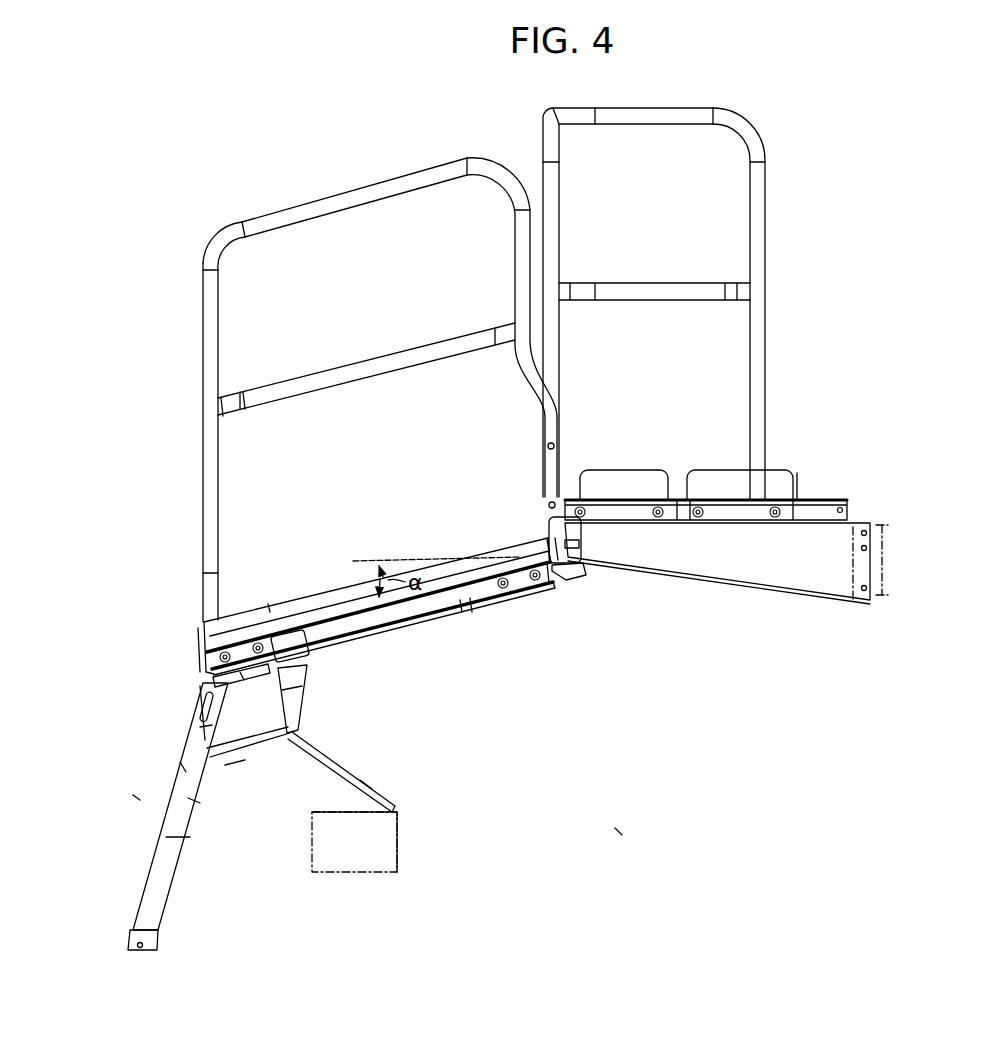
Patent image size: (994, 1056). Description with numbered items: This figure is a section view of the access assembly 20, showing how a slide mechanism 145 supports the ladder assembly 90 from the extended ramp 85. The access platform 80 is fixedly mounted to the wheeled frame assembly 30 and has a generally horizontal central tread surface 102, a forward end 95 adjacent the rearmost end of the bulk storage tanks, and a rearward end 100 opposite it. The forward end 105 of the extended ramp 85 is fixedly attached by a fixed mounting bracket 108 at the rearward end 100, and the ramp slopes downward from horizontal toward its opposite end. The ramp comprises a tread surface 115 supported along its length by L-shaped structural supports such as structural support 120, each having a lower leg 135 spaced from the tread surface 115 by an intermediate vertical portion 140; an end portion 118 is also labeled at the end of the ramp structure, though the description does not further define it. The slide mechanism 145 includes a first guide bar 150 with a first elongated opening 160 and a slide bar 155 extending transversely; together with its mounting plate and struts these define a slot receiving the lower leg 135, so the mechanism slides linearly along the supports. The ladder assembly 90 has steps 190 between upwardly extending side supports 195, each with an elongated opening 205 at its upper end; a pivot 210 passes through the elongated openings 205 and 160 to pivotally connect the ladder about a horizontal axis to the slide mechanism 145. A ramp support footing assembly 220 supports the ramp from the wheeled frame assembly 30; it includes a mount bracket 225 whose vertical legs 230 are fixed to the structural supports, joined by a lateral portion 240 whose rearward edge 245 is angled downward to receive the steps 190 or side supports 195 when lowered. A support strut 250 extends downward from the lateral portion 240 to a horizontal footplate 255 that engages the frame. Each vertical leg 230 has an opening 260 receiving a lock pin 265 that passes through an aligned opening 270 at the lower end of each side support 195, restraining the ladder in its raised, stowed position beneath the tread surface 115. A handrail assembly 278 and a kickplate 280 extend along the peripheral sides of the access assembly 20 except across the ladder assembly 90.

The access assembly 20 is at (620, 832).
The wheeled frame assembly 30 is at (400, 866).
The access platform 80 is at (802, 376).
The extended ramp 85 is at (405, 463).
The ladder assembly 90 is at (126, 793).
The forward end 95 is at (870, 612).
The rearward end 100 is at (566, 600).
The central tread surface 102 is at (622, 495).
The forward end 105 is at (549, 594).
The fixed mounting bracket 108 is at (574, 571).
The tread surface 115 is at (318, 620).
The bar end plate 118 is at (196, 617).
The structural support 120 is at (403, 624).
The lower leg 135 is at (473, 609).
The intermediate vertical portion 140 is at (463, 603).
The slide mechanism 145 is at (326, 654).
The first guide bar 150 is at (292, 692).
The slide bar 155 is at (314, 640).
The first elongated opening 160 is at (203, 704).
The steps 190 is at (168, 880).
The side support 195 is at (196, 800).
The elongated opening 205 is at (191, 727).
The pivot 210 is at (203, 687).
The ramp support footing assembly 220 is at (420, 816).
The mount bracket 225 is at (242, 676).
The vertical leg 230 is at (328, 758).
The lateral portion 240 is at (183, 765).
The rearward edge 245 is at (207, 760).
The support strut 250 is at (368, 786).
The footplate 255 is at (313, 808).
The opening 260 is at (245, 672).
The lock pin 265 is at (233, 768).
The opening 270 is at (150, 958).
The handrail assembly 278 is at (340, 188).
The kickplate 280 is at (270, 597).